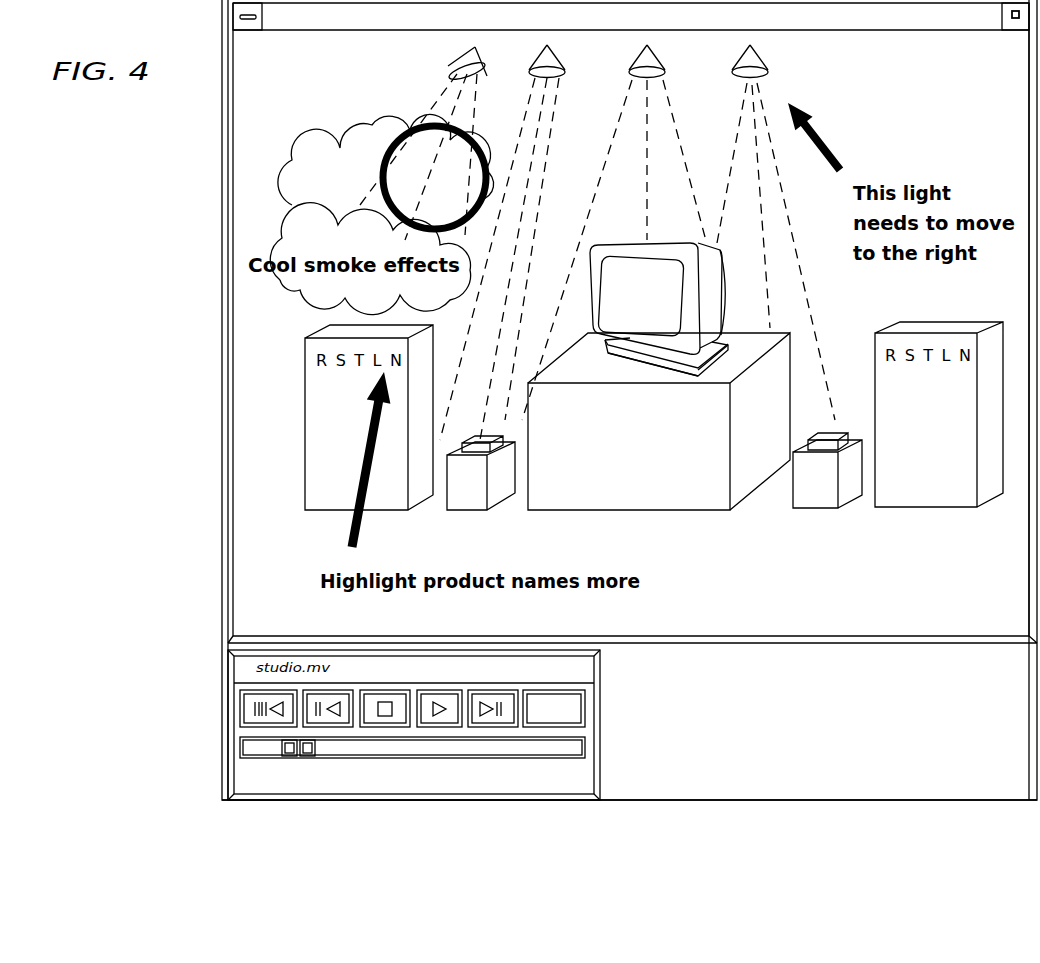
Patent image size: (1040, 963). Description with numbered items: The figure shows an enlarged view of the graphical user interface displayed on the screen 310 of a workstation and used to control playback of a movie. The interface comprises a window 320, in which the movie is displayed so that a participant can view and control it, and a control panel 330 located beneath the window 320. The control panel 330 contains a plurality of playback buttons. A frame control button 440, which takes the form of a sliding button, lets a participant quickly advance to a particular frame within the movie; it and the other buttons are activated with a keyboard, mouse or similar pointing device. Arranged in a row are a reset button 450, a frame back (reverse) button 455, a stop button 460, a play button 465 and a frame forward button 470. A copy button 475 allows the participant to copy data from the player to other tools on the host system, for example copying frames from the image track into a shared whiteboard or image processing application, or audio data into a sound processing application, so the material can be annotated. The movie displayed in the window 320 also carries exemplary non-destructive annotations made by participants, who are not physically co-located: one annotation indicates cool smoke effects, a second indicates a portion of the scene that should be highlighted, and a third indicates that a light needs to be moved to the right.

The screen 310 is at (777, 801).
The window 320 is at (233, 470).
The control panel 330 is at (326, 782).
The frame control button 440 is at (430, 762).
The reset button 450 is at (240, 712).
The frame back (reverse) button 455 is at (306, 728).
The stop button 460 is at (381, 728).
The play button 465 is at (455, 728).
The frame forward button 470 is at (498, 728).
The copy button 475 is at (587, 708).